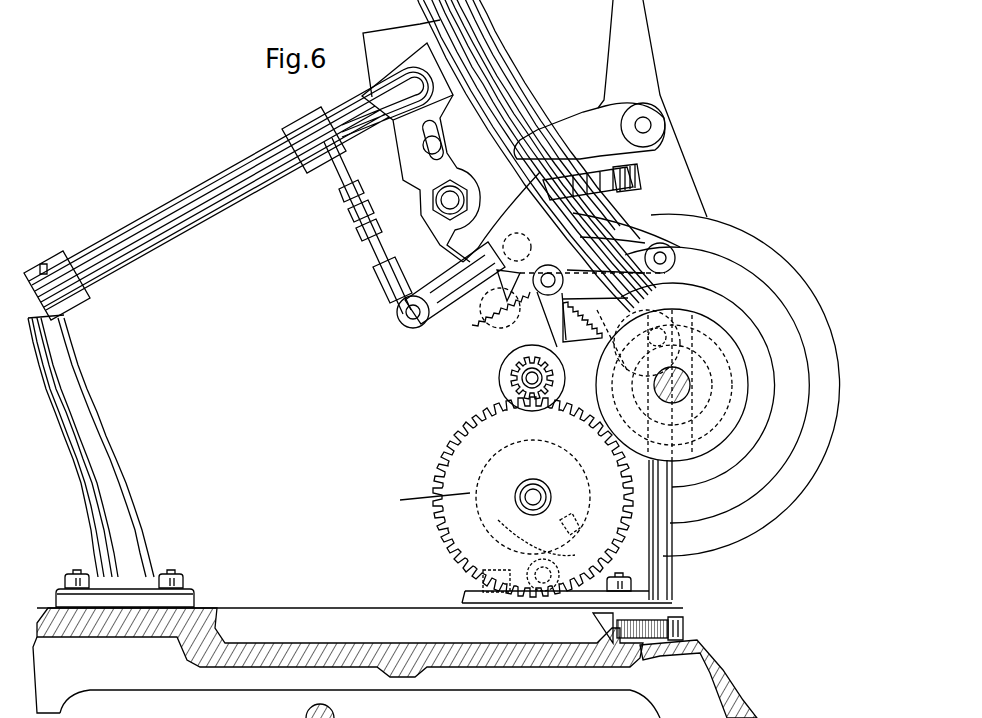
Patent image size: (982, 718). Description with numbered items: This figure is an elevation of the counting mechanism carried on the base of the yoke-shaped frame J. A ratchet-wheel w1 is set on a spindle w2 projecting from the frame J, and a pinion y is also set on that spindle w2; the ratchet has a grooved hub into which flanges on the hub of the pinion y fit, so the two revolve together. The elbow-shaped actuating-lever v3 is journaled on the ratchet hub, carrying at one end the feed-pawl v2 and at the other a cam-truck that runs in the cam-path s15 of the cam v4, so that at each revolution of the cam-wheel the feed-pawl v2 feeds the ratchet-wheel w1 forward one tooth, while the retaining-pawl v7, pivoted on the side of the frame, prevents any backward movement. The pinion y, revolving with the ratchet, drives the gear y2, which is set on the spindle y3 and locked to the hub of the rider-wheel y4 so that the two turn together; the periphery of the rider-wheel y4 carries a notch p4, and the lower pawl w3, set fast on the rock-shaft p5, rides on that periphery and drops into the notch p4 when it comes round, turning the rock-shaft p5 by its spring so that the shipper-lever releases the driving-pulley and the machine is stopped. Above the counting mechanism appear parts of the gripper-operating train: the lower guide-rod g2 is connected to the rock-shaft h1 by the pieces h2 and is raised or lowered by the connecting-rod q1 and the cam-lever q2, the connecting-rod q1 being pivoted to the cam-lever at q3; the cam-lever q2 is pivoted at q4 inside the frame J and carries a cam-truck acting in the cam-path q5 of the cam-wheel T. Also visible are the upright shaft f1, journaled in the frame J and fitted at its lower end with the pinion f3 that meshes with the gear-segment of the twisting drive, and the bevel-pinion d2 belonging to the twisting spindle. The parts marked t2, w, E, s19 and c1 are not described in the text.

The lower guide-rod g2 is at (258, 152).
The rock-shaft h1 is at (230, 189).
The connecting pieces h2 is at (185, 213).
The hook strap and slot t2 is at (410, 109).
The yoke-shaped frame J is at (521, 311).
The connecting-rod q1 is at (342, 175).
The cam-lever q2 is at (540, 280).
The pivot of connecting-rod q3 is at (400, 320).
The cam-lever pivot q4 is at (502, 280).
The cam-path q5 is at (698, 380).
The feed-pawl v2 is at (581, 285).
The actuating-lever v3 is at (578, 331).
The cam v4 is at (673, 387).
The retaining-pawl v7 is at (595, 303).
The ratchet-wheel w1 is at (535, 335).
The spindle w2 is at (498, 382).
The lower pawl w3 is at (536, 538).
The screw w is at (688, 617).
The pinion y is at (533, 488).
The gear y2 is at (537, 498).
The spindle y3 is at (515, 503).
The rider-wheel y4 is at (433, 503).
The notch p4 is at (583, 512).
The rock-shaft p5 is at (521, 575).
The cam-wheel T is at (732, 385).
The shaft E is at (672, 385).
The cam-path s15 is at (671, 385).
The base wedge s19 is at (595, 620).
The upright shaft f1 is at (500, 58).
The pinion f3 is at (588, 175).
The bevel-pinion d2 is at (623, 181).
The arm c1 is at (610, 108).